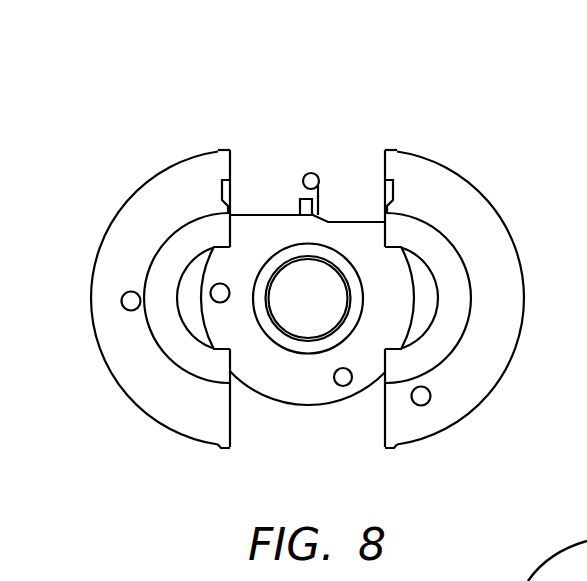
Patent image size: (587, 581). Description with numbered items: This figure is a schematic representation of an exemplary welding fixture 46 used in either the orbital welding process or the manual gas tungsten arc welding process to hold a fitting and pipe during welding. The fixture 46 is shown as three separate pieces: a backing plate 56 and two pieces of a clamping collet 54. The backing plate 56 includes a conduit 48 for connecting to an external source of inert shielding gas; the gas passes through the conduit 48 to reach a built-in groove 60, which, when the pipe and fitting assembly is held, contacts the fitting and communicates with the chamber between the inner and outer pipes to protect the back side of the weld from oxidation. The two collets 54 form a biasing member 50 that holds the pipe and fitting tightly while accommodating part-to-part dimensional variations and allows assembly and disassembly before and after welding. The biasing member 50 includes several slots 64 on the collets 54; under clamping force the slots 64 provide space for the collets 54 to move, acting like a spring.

The fixture 46 is at (191, 124).
The conduit 48 is at (315, 173).
The biasing member 50 is at (102, 205).
The clamping collet 54 is at (152, 180).
The backing plate 56 is at (325, 392).
The groove 60 is at (295, 362).
The slot 64 is at (383, 158).